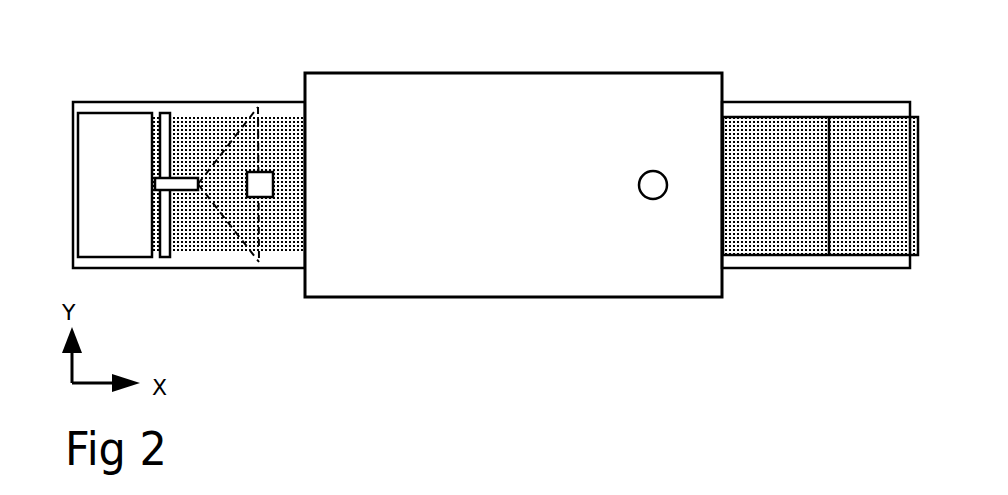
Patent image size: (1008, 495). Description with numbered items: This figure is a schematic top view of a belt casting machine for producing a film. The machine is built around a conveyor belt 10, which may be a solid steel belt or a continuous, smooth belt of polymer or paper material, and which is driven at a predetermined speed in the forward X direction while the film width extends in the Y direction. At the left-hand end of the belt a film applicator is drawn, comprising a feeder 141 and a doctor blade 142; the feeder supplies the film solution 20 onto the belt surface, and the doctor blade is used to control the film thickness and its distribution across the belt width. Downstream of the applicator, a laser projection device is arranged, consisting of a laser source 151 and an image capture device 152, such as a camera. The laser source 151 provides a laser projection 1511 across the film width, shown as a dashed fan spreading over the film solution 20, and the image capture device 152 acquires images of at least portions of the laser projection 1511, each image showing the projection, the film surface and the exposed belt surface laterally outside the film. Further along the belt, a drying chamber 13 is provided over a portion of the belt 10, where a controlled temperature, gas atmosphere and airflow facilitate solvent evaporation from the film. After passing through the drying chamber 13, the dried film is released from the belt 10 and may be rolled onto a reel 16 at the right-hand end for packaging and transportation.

The conveyor belt 10 is at (278, 262).
The drying chamber 13 is at (492, 253).
The reel 16 is at (875, 237).
The film solution 20 is at (203, 233).
The feeder 141 is at (115, 147).
The doctor blade 142 is at (160, 112).
The laser source 151 is at (188, 175).
The laser projection 1511 is at (233, 140).
The image capture device 152 is at (272, 168).